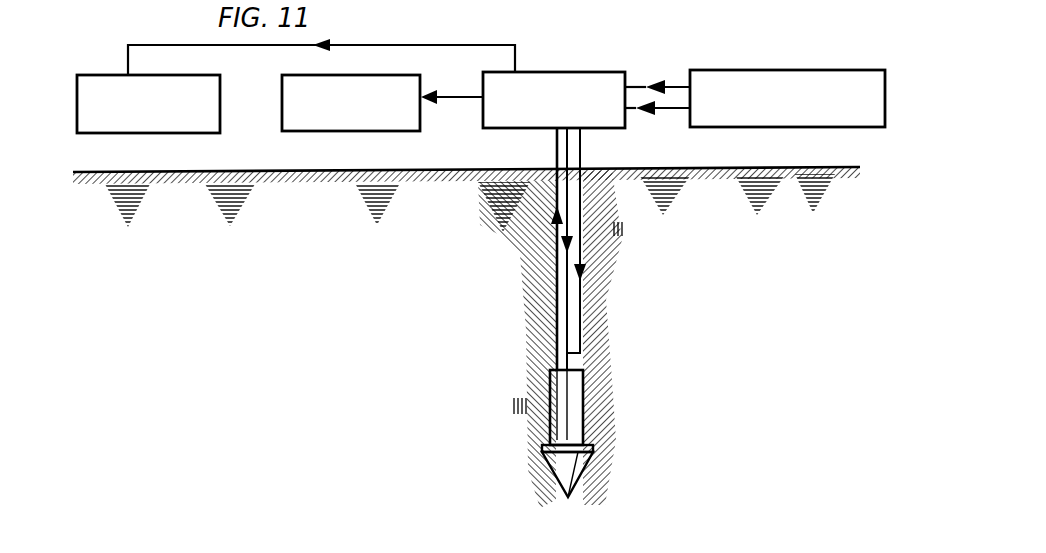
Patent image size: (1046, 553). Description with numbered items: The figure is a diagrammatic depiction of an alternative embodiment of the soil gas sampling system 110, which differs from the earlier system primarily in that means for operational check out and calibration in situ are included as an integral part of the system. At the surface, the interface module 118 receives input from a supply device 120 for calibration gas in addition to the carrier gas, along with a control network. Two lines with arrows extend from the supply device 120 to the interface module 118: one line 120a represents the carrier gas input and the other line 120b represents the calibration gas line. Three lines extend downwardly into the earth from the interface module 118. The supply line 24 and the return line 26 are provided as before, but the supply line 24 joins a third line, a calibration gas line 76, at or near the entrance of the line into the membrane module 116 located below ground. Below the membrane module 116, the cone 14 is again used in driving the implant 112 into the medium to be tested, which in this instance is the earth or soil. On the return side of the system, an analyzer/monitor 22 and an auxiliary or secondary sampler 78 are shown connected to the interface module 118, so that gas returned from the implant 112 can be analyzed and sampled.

The secondary sampler 78 is at (91, 75).
The analyzer/monitor 22 is at (283, 77).
The system 110 is at (582, 25).
The interface module 118 is at (600, 80).
The supply device 120 is at (814, 40).
The carrier gas input line 120a is at (674, 85).
The calibration gas line 120b is at (673, 110).
The return line 26 is at (556, 136).
The calibration gas line 76 is at (579, 142).
The supply line 24 is at (583, 262).
The implant 112 is at (628, 316).
The membrane module 116 is at (580, 402).
The cone 14 is at (595, 462).